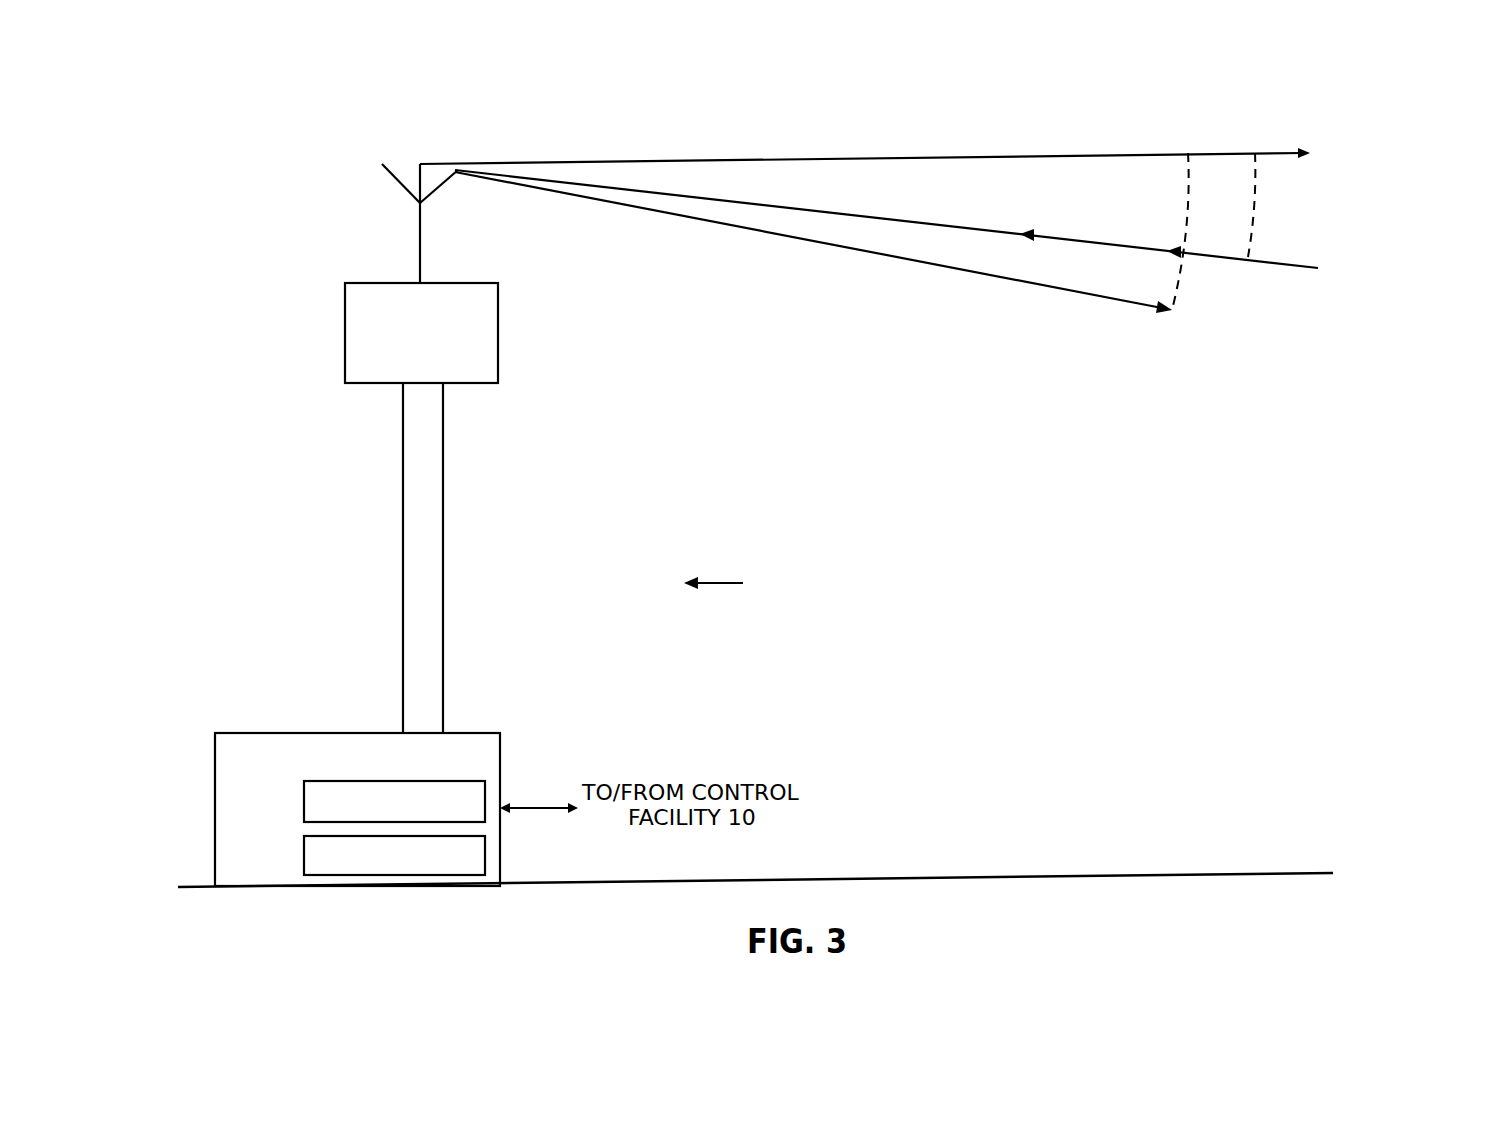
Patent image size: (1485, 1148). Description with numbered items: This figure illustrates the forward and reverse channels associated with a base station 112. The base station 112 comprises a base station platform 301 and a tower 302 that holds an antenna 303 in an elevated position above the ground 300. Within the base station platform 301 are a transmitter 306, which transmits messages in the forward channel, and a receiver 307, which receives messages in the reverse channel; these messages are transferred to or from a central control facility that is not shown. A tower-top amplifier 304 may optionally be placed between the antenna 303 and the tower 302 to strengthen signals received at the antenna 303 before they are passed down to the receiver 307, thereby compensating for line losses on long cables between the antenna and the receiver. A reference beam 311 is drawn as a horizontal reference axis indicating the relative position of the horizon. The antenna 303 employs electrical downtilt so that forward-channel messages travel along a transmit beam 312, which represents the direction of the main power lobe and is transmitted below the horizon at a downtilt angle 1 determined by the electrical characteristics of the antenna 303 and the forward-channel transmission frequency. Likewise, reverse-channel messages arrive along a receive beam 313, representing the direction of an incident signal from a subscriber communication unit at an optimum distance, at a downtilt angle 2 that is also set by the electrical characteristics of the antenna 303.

The ground 300 is at (955, 878).
The base station platform 301 is at (275, 733).
The tower 302 is at (444, 510).
The antenna 303 is at (398, 181).
The tower-top amplifier 304 is at (499, 330).
The transmitter 306 is at (304, 800).
The receiver 307 is at (304, 855).
The reference beam 311 is at (970, 156).
The transmit beam 312 is at (919, 262).
The receive beam 313 is at (975, 228).
The downtilt angle θ 1 is at (1178, 284).
The downtilt angle θ 2 is at (1256, 199).
The base station 112 is at (738, 584).